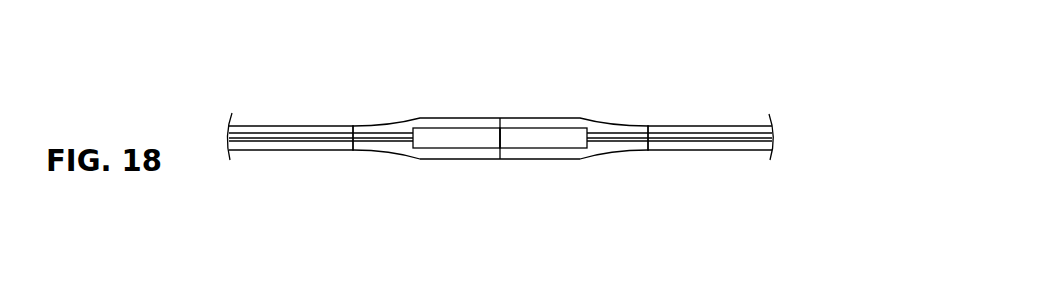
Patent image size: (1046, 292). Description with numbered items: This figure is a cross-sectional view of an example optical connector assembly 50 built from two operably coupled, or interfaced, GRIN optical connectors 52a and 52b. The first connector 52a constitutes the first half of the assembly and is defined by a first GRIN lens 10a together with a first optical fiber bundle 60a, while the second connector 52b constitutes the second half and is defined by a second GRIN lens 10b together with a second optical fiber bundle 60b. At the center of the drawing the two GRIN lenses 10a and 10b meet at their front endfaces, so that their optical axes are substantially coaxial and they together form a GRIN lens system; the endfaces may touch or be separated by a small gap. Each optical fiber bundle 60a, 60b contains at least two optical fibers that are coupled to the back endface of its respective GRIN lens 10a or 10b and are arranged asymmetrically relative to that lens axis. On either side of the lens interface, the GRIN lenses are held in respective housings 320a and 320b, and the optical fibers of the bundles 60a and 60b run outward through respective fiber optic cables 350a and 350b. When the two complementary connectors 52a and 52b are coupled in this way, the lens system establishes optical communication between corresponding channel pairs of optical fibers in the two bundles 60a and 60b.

The optical connector assembly 50 is at (258, 44).
The fiber optic cable 350a is at (262, 124).
The fiber optic cable 350b is at (738, 127).
The first optical fiber bundle 60a is at (306, 141).
The second optical fiber bundle 60b is at (692, 142).
The housing 320a is at (375, 121).
The housing 320b is at (615, 122).
The first half of optical connector assembly 52a is at (368, 162).
The second half of optical connector assembly 52b is at (598, 163).
The GRIN lens 10a is at (451, 122).
The GRIN lens 10b is at (526, 122).